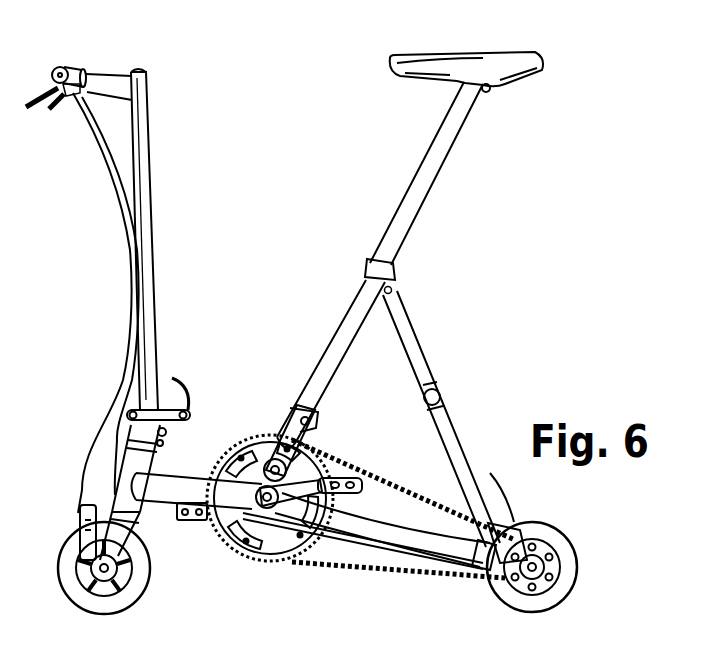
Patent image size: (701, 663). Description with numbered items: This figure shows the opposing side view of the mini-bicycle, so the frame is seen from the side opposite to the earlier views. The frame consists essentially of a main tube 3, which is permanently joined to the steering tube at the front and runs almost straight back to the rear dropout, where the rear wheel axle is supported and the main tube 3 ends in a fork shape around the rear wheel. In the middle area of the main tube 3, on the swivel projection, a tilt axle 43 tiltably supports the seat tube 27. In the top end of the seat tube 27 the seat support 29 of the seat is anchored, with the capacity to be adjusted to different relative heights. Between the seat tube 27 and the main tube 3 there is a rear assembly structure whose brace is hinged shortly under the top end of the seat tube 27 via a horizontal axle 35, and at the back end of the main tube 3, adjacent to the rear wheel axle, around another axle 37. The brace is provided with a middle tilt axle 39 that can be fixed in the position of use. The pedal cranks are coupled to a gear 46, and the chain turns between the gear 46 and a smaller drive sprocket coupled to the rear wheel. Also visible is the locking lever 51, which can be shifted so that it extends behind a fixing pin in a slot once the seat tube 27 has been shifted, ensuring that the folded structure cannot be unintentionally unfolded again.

The main tube 3 is at (198, 500).
The seat tube 27 is at (353, 327).
The seat support 29 is at (428, 177).
The horizontal axle 35 is at (392, 289).
The axle 37 is at (480, 580).
The middle tilt axle 39 is at (447, 393).
The tilt axle 43 is at (272, 460).
The gear 46 is at (238, 450).
The locking lever 51 is at (320, 412).